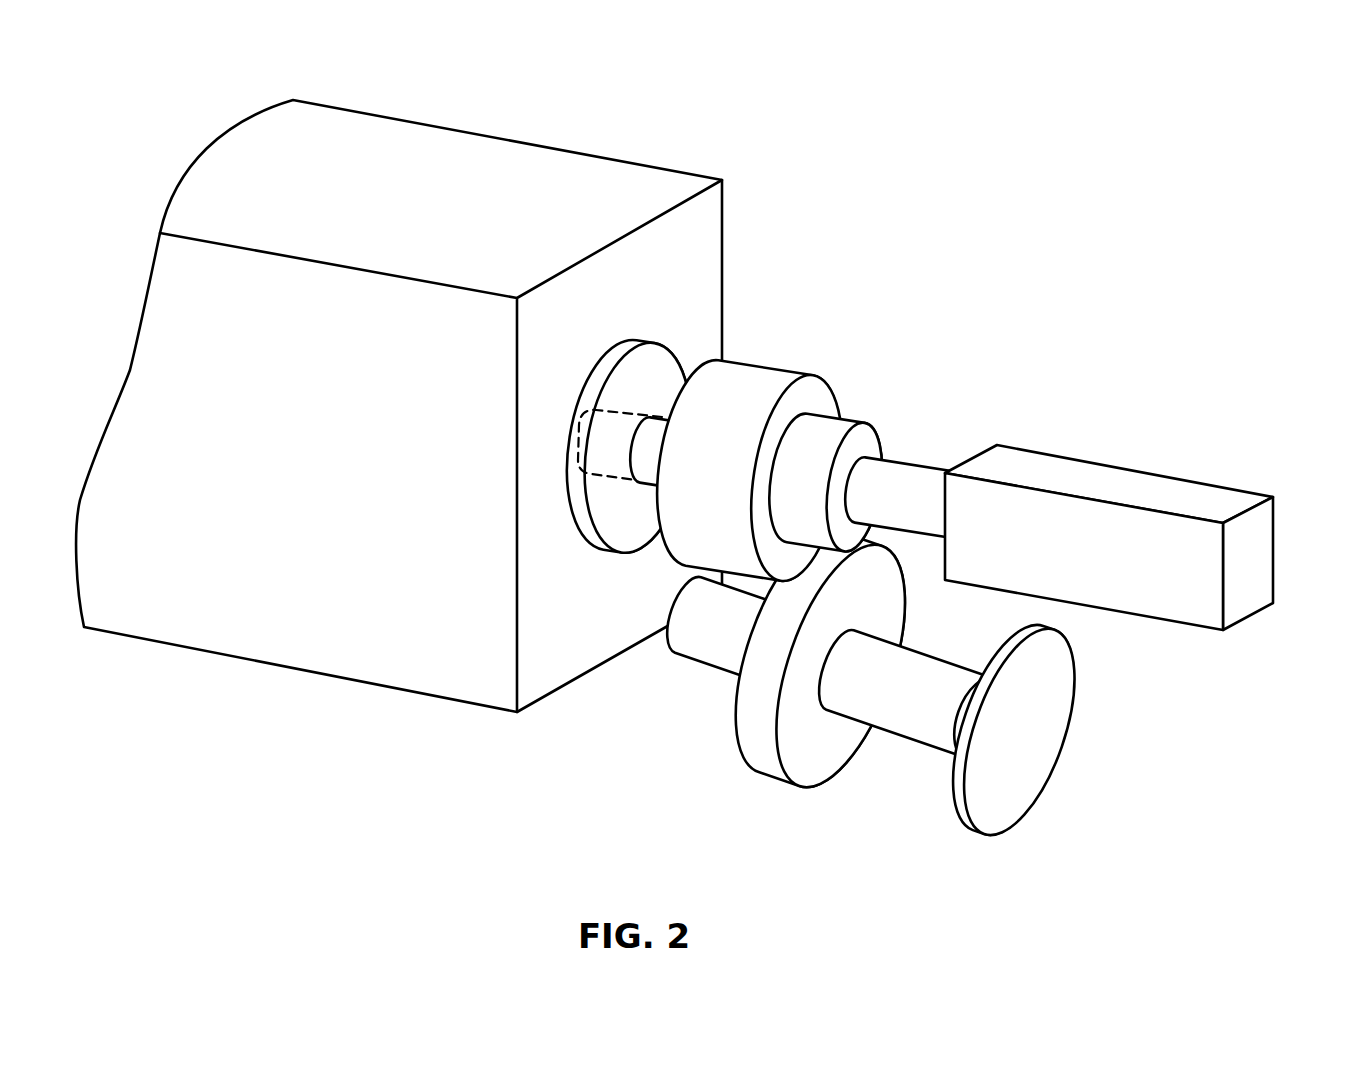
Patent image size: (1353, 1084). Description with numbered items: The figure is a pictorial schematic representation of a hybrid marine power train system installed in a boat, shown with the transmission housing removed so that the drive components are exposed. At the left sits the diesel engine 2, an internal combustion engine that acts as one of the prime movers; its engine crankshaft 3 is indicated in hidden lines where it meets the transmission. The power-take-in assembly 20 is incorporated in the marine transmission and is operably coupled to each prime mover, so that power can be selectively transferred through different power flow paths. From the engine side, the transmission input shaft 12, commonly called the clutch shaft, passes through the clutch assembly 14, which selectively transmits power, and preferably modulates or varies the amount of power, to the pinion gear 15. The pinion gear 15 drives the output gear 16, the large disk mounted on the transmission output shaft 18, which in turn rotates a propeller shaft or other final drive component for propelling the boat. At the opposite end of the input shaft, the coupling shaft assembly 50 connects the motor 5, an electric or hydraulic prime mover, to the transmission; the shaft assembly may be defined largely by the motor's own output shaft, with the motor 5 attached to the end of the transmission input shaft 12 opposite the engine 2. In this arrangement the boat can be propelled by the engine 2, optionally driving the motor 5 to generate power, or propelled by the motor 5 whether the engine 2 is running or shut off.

The diesel engine 2 is at (302, 496).
The engine crankshaft 3 is at (618, 427).
The power-take-in assembly 20 is at (662, 340).
The clutch assembly 14 is at (771, 366).
The pinion gear 15 is at (853, 423).
The transmission input shaft 12 is at (913, 477).
The coupling shaft assembly 50 is at (983, 497).
The motor 5 is at (1121, 496).
The output gear 16 is at (763, 750).
The transmission output shaft 18 is at (935, 735).